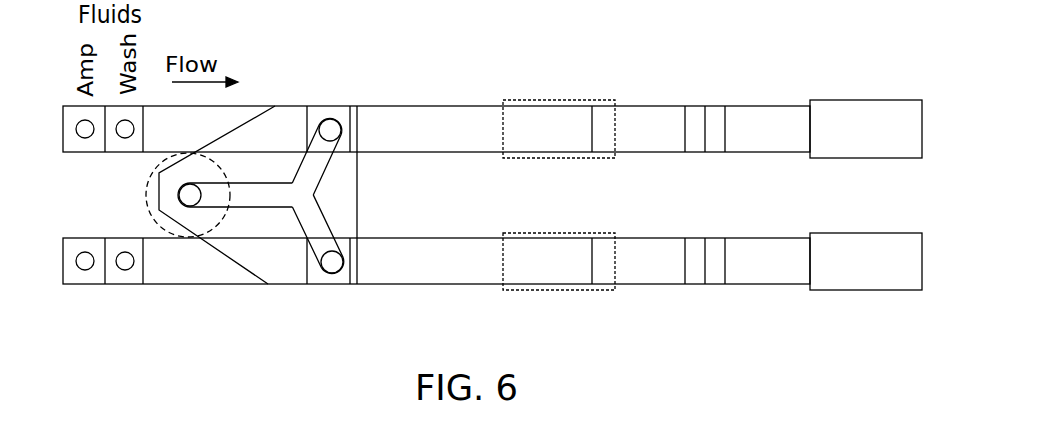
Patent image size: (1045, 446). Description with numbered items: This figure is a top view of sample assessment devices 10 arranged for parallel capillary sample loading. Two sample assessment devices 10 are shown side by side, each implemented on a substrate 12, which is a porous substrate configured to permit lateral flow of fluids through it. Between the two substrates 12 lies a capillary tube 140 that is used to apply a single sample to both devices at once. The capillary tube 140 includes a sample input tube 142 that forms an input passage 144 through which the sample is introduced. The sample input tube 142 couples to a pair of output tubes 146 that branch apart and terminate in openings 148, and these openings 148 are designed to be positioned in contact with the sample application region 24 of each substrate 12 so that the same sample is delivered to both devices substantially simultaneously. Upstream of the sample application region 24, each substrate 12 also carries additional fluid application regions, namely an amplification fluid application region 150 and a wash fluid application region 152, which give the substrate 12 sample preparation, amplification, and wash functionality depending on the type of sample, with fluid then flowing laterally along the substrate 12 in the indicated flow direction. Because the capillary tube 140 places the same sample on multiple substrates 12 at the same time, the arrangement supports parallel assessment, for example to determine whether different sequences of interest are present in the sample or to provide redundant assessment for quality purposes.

The sample assessment device 10 is at (612, 53).
The substrate 12 is at (72, 106).
The sample application region 24 is at (310, 285).
The capillary tube 140 is at (281, 168).
The sample input tube 142 is at (262, 208).
The input passage 144 is at (147, 198).
The output tube 146 is at (322, 216).
The opening 148 is at (332, 262).
The amplification fluid application region 150 is at (77, 286).
The wash fluid application region 152 is at (132, 286).